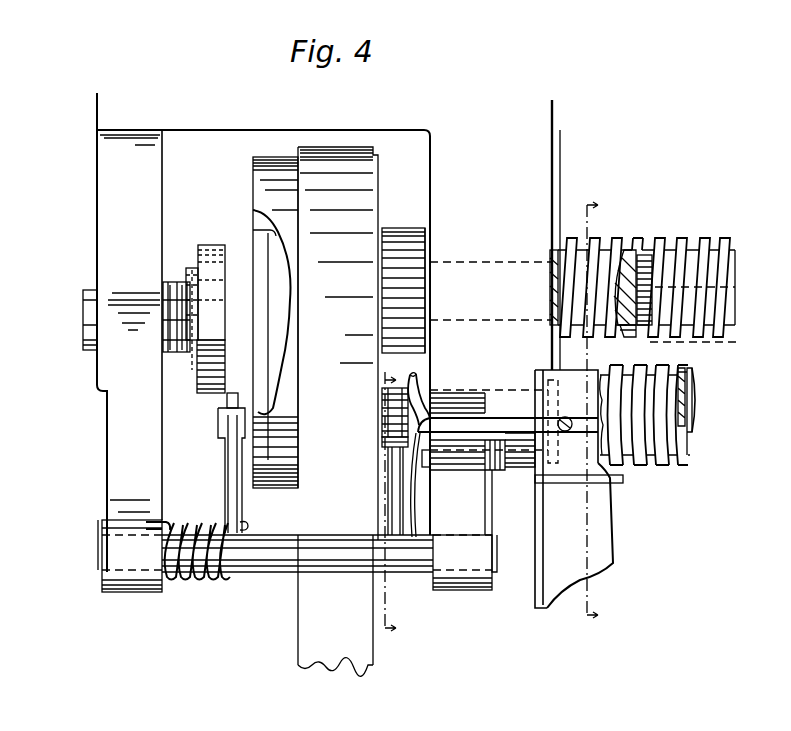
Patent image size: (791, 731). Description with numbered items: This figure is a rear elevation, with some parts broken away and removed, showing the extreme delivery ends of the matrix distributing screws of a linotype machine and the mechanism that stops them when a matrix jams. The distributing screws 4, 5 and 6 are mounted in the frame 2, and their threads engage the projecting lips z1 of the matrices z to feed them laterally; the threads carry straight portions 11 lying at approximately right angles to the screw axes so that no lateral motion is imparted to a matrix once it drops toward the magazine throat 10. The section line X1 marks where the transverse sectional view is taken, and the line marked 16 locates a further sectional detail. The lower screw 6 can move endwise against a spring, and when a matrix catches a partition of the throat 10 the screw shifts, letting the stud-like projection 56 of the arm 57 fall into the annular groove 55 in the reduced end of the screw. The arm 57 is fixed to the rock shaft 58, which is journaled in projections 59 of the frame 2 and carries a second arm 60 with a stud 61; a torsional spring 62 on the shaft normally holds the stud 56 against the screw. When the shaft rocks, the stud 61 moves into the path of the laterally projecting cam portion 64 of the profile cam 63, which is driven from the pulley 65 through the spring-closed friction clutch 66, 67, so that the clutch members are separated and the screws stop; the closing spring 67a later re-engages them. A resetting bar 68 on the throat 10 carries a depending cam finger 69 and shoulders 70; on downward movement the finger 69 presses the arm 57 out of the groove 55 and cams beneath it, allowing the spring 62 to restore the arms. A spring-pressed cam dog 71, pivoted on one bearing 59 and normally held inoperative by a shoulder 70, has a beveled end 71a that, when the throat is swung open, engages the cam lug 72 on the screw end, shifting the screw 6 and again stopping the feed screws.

The frame 2 is at (321, 332).
The distributing screw 4 is at (600, 240).
The distributing screw 5 is at (684, 262).
The lower distributing screw 6 is at (668, 460).
The magazine throat 10 is at (597, 527).
The straight portions 11 is at (682, 385).
The section line X- 16 is at (394, 504).
The annular groove 55 is at (378, 418).
The stud-like projection 56 is at (382, 447).
The arm 57 is at (388, 505).
The rock shaft 58 is at (275, 560).
The projections 59 is at (133, 588).
The arm 60 is at (228, 483).
The stud-like projection 61 is at (225, 402).
The torsional spring 62 is at (198, 580).
The profile cam 63 is at (208, 375).
The cam portion 64 is at (228, 318).
The pulley 65 is at (271, 168).
The clutch member 66 is at (277, 310).
The clutch member 67 is at (253, 250).
The closing spring 67a is at (178, 277).
The bar 68 is at (505, 423).
The cam finger 69 is at (414, 512).
The shoulders 70 is at (433, 443).
The cam dog 71 is at (428, 398).
The beveled end 71a is at (443, 350).
The cam lug 72 is at (430, 418).
The matrices z is at (650, 345).
The projecting lips z1 is at (693, 408).
The section line X1 is at (583, 407).